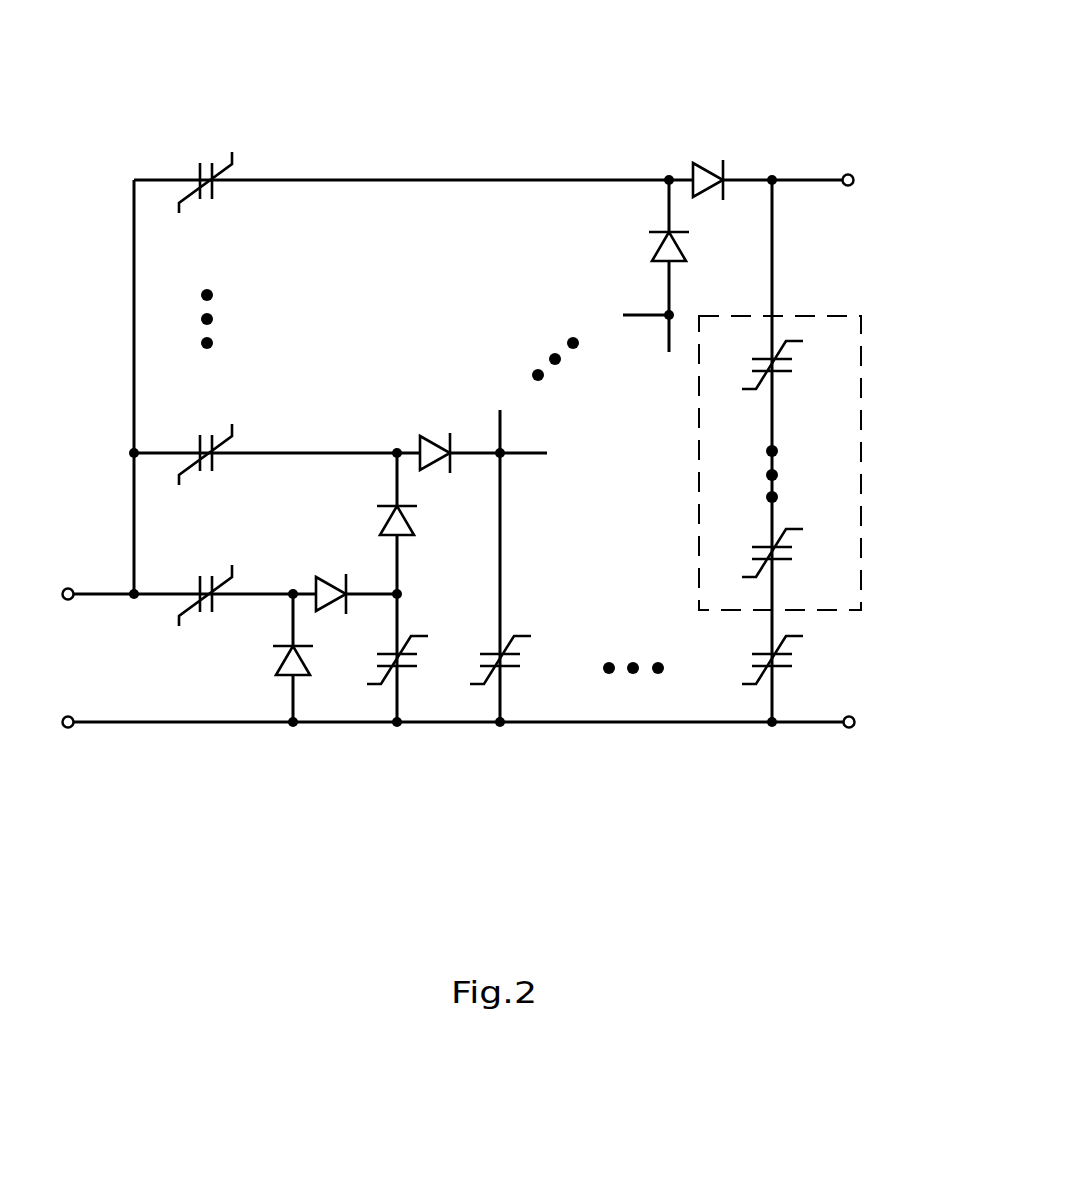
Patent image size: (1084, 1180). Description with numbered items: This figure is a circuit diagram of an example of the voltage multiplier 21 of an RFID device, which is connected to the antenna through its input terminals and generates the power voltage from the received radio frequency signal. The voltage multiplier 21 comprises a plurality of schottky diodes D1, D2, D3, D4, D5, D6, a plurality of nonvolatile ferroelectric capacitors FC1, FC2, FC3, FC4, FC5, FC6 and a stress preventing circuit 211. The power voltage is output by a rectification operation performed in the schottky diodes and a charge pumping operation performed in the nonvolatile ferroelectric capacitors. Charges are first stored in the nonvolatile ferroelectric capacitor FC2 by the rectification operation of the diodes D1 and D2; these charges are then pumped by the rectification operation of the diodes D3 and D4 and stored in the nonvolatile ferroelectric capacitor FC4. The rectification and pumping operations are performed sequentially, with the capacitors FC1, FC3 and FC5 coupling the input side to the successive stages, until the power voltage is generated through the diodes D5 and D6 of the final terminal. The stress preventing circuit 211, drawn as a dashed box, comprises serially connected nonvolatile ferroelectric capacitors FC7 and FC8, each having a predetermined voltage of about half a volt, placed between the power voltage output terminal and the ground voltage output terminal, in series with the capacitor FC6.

The voltage multiplier 21 is at (770, 100).
The stress preventing circuit 211 is at (830, 449).
The nonvolatile ferroelectric capacitor FC1 is at (206, 607).
The nonvolatile ferroelectric capacitor FC2 is at (408, 669).
The nonvolatile ferroelectric capacitor FC3 is at (206, 466).
The nonvolatile ferroelectric capacitor FC4 is at (512, 669).
The nonvolatile ferroelectric capacitor FC5 is at (206, 194).
The nonvolatile ferroelectric capacitor FC6 is at (783, 668).
The nonvolatile ferroelectric capacitor FC7 is at (783, 375).
The nonvolatile ferroelectric capacitor FC8 is at (783, 562).
The schottky diode D1 is at (278, 663).
The schottky diode D2 is at (331, 610).
The schottky diode D3 is at (380, 524).
The schottky diode D4 is at (435, 470).
The schottky diode D5 is at (653, 251).
The schottky diode D6 is at (708, 195).